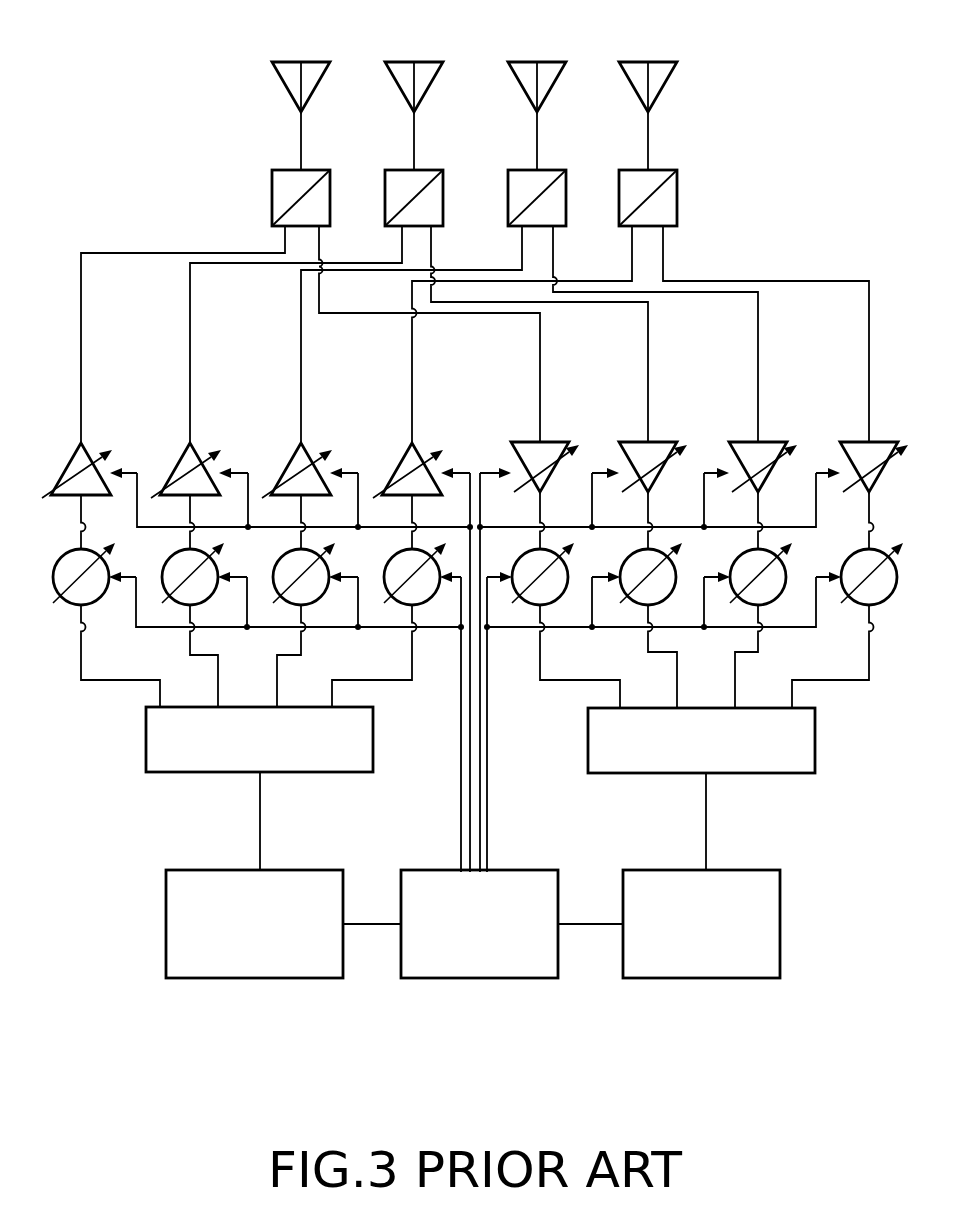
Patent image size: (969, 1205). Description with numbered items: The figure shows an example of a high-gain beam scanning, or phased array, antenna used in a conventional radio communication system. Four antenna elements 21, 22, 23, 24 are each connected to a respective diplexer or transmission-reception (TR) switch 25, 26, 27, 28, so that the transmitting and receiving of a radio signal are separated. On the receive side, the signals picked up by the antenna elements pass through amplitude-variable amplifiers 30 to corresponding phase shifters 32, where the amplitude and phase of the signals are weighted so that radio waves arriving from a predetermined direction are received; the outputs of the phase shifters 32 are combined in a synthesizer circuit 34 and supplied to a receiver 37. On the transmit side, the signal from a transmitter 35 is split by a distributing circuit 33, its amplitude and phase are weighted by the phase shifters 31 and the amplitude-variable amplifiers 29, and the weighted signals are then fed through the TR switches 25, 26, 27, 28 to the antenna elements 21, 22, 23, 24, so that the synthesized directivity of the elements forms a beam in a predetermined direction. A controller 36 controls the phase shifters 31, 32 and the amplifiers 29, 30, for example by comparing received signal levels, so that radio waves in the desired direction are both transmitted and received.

The antenna element 21 is at (294, 58).
The antenna element 22 is at (407, 58).
The antenna element 23 is at (530, 58).
The antenna element 24 is at (641, 58).
The transmission-reception (TR) switch 25 is at (317, 168).
The transmission-reception (TR) switch 26 is at (430, 168).
The transmission-reception (TR) switch 27 is at (553, 168).
The transmission-reception (TR) switch 28 is at (664, 168).
The amplitude-variable amplifier 29 is at (416, 446).
The amplitude-variable amplifier 30 is at (884, 441).
The phase shifter 31 is at (440, 640).
The phase shifter 32 is at (907, 640).
The distributing circuit 33 is at (320, 773).
The synthesizer circuit 34 is at (765, 774).
The transmitter 35 is at (275, 979).
The controller 36 is at (498, 979).
The receiver 37 is at (727, 979).